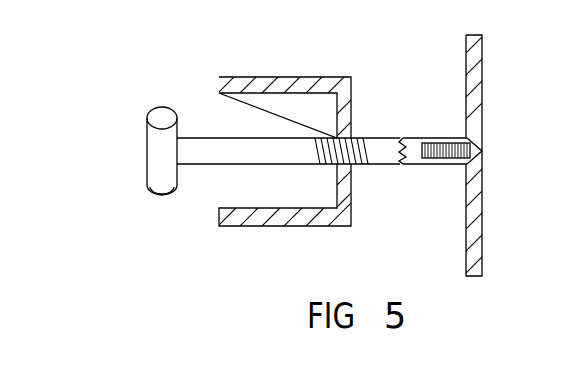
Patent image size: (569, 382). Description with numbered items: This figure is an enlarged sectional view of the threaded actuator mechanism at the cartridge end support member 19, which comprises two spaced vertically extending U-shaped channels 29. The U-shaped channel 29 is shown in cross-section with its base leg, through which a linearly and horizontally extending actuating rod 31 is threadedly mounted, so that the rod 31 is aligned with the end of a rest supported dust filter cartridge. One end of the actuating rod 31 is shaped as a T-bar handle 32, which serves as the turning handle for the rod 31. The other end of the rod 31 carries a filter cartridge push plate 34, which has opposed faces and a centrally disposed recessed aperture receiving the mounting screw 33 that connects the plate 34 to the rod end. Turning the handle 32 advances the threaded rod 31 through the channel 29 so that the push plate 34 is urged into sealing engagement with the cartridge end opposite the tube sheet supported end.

The cartridge end support member 19 is at (270, 73).
The U-shaped channel 29 is at (347, 110).
The actuating rod 31 is at (362, 160).
The T-bar handle 32 is at (155, 155).
The mounting screw 33 is at (443, 147).
The filter cartridge push plate 34 is at (473, 240).